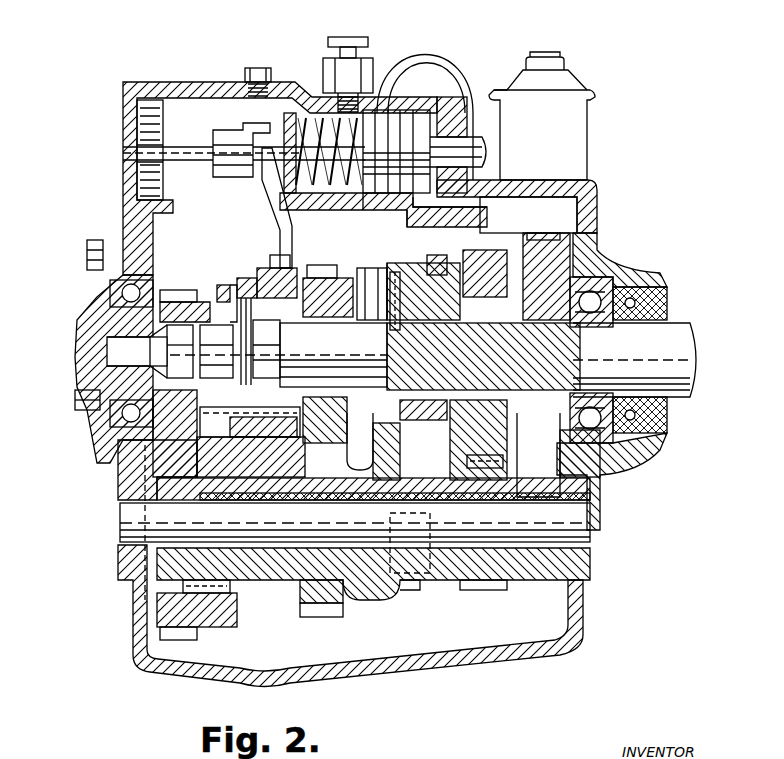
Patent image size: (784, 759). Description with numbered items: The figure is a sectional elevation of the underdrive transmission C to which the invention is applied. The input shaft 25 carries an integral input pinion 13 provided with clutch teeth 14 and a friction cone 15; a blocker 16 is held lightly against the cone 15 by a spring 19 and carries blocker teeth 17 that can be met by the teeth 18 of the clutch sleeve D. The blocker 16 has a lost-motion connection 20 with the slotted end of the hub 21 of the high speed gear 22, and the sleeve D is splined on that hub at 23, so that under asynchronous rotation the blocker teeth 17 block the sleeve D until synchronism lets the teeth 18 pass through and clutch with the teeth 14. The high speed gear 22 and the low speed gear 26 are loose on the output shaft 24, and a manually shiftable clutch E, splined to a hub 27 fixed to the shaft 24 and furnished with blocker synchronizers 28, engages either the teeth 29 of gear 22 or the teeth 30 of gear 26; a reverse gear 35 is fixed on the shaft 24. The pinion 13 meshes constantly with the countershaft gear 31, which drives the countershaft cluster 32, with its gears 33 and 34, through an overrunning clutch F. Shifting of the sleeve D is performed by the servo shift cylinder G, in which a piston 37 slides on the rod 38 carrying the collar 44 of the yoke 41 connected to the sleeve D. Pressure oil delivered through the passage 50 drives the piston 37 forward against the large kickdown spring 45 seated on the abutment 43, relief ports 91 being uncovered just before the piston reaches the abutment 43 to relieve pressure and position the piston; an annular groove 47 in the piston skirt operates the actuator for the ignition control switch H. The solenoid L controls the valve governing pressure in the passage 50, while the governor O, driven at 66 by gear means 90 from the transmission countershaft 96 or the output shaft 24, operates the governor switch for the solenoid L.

The ignition control switch H is at (336, 50).
The spring 19 is at (323, 97).
The rod 38 is at (200, 140).
The collar 44 is at (235, 128).
The yoke 41 is at (266, 196).
The clutch sleeve D is at (290, 258).
The abutment 43 is at (330, 200).
The kickdown spring 45 is at (352, 200).
The piston 37 is at (372, 209).
The relief ports 91 is at (393, 272).
The annular groove 47 is at (383, 110).
The shift cylinder G is at (430, 115).
The governor O is at (456, 72).
The solenoid L is at (567, 84).
The passage 50 is at (435, 209).
The reverse gear 35 is at (545, 230).
The low speed gear 26 is at (477, 256).
The teeth 30 is at (440, 268).
The teeth 29 is at (378, 275).
The manually shiftable clutch E is at (395, 265).
The high speed gear 22 is at (328, 273).
The hub 21 is at (262, 270).
The lost-motion connection 20 is at (235, 282).
The blocker teeth 17 is at (224, 285).
The teeth 18 is at (245, 278).
The clutch teeth 14 is at (210, 300).
The input pinion 13 is at (180, 292).
The friction cone 15 is at (240, 315).
The blocker 16 is at (246, 326).
The splines 23 is at (281, 320).
The blocker synchronizers 28 is at (385, 316).
The hub 27 is at (420, 331).
The output shaft 24 is at (680, 328).
The input shaft 25 is at (76, 352).
The countershaft gear 31 is at (112, 460).
The overrunning clutch F is at (212, 470).
The countershaft cluster 32 is at (380, 490).
The transmission countershaft 96 is at (122, 523).
The gear means 90 is at (432, 515).
The governor drive 66 is at (413, 585).
The gear 33 is at (316, 617).
The gear 34 is at (505, 590).
The transmission C is at (600, 478).